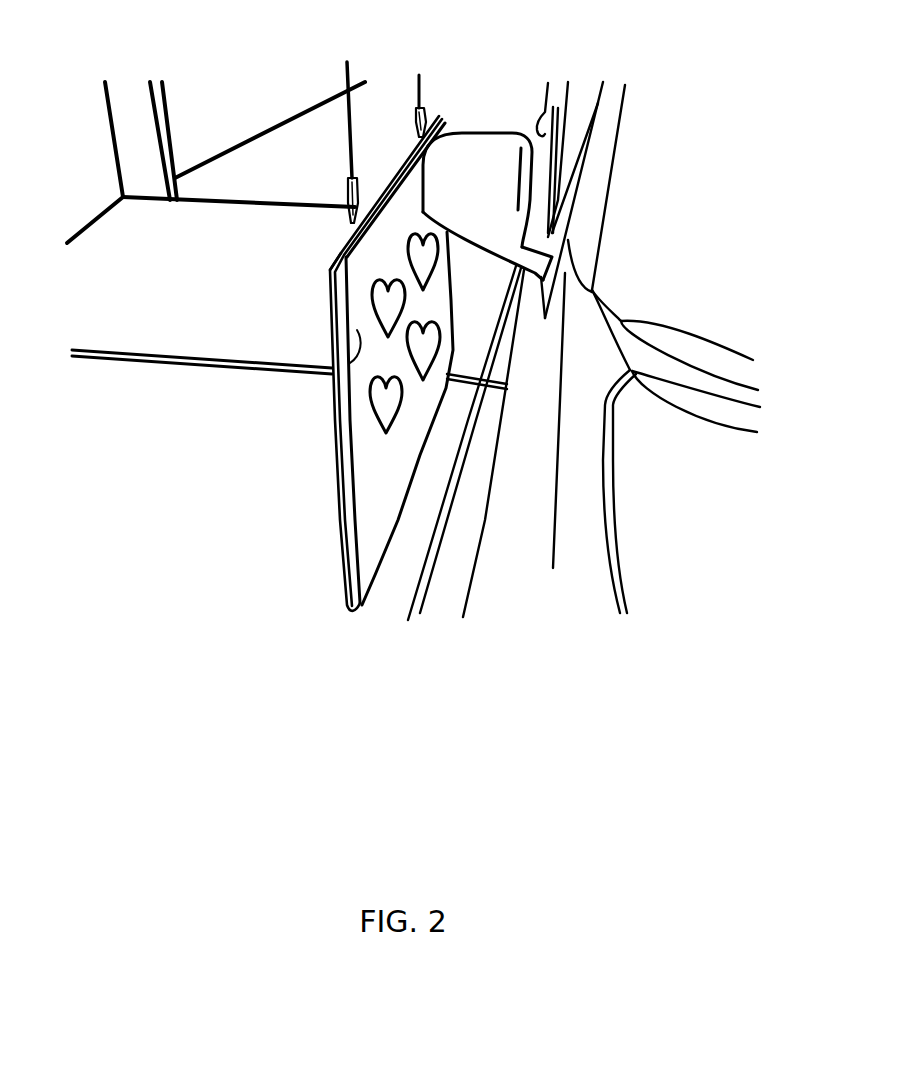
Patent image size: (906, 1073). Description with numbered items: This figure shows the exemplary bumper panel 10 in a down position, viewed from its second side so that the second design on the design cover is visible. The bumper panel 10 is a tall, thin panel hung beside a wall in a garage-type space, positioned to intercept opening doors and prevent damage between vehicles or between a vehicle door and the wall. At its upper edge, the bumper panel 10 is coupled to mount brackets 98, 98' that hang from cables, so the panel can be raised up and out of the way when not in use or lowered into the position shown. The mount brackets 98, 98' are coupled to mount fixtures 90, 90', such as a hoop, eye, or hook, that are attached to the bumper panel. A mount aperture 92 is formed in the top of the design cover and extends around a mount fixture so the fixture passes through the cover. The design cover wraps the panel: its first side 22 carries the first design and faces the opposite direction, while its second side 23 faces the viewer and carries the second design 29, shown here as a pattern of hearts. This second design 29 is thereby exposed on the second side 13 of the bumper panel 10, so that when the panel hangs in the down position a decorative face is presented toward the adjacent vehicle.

The bumper panel 10 is at (462, 108).
The second side of the bumper panel 13 is at (364, 565).
The first side of the design cover 22 is at (333, 527).
The second side of the design cover 23 is at (325, 370).
The second design 29 is at (383, 398).
The mount fixture 90 is at (396, 114).
The mount fixture 90' is at (318, 199).
The mount aperture 92 is at (338, 238).
The mount bracket 98 is at (446, 83).
The mount bracket 98' is at (327, 127).